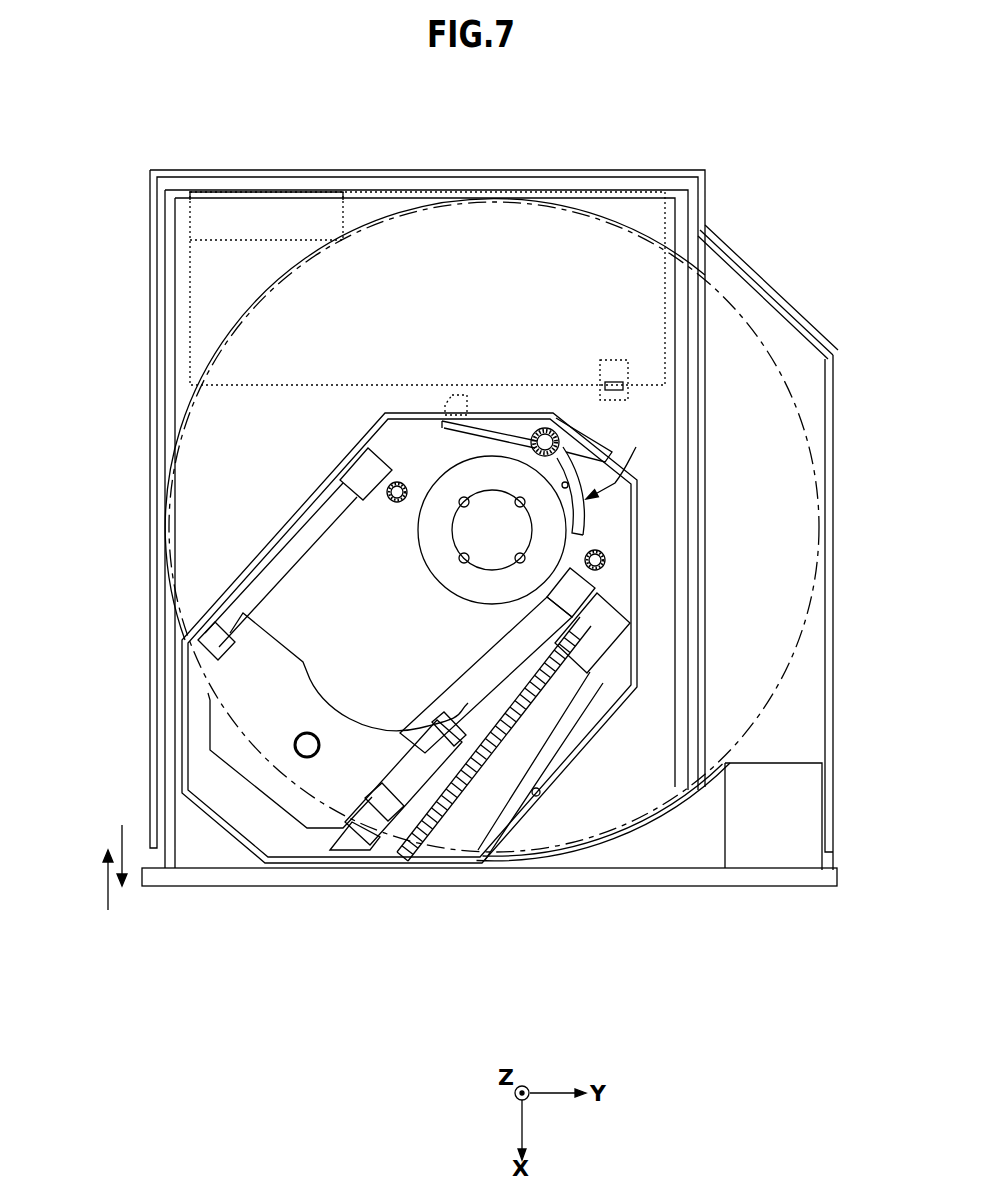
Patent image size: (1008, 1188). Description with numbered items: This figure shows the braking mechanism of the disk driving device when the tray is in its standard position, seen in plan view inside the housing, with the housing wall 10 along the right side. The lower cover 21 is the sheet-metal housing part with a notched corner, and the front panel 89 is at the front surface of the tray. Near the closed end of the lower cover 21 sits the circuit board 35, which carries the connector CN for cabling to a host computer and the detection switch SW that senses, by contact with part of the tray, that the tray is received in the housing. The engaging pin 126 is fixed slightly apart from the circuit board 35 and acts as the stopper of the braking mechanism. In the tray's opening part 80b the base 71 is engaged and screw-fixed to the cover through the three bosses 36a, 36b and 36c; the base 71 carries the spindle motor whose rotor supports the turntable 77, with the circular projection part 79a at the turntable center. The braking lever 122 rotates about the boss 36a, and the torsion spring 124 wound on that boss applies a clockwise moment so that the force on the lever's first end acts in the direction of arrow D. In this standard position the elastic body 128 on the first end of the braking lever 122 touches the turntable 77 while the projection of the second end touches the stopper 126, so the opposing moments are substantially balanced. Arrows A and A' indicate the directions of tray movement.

The housing 10 is at (800, 392).
The lower cover 21 is at (790, 300).
The circuit board 35 is at (525, 197).
The connector CN is at (336, 192).
The detection switch SW is at (615, 360).
The engaging pin 126 is at (458, 395).
The boss 36a is at (551, 430).
The boss 36b is at (605, 560).
The boss 36c is at (399, 482).
The torsion spring 124 is at (590, 442).
The braking lever 122 is at (583, 515).
The elastic body 128 is at (577, 510).
The arrow D is at (617, 461).
The turntable 77 is at (414, 522).
The projection part 79a is at (530, 530).
The base 71 is at (470, 832).
The opening part 80b is at (540, 796).
The front panel 89 is at (210, 878).
The direction A is at (97, 854).
The direction A' is at (79, 880).